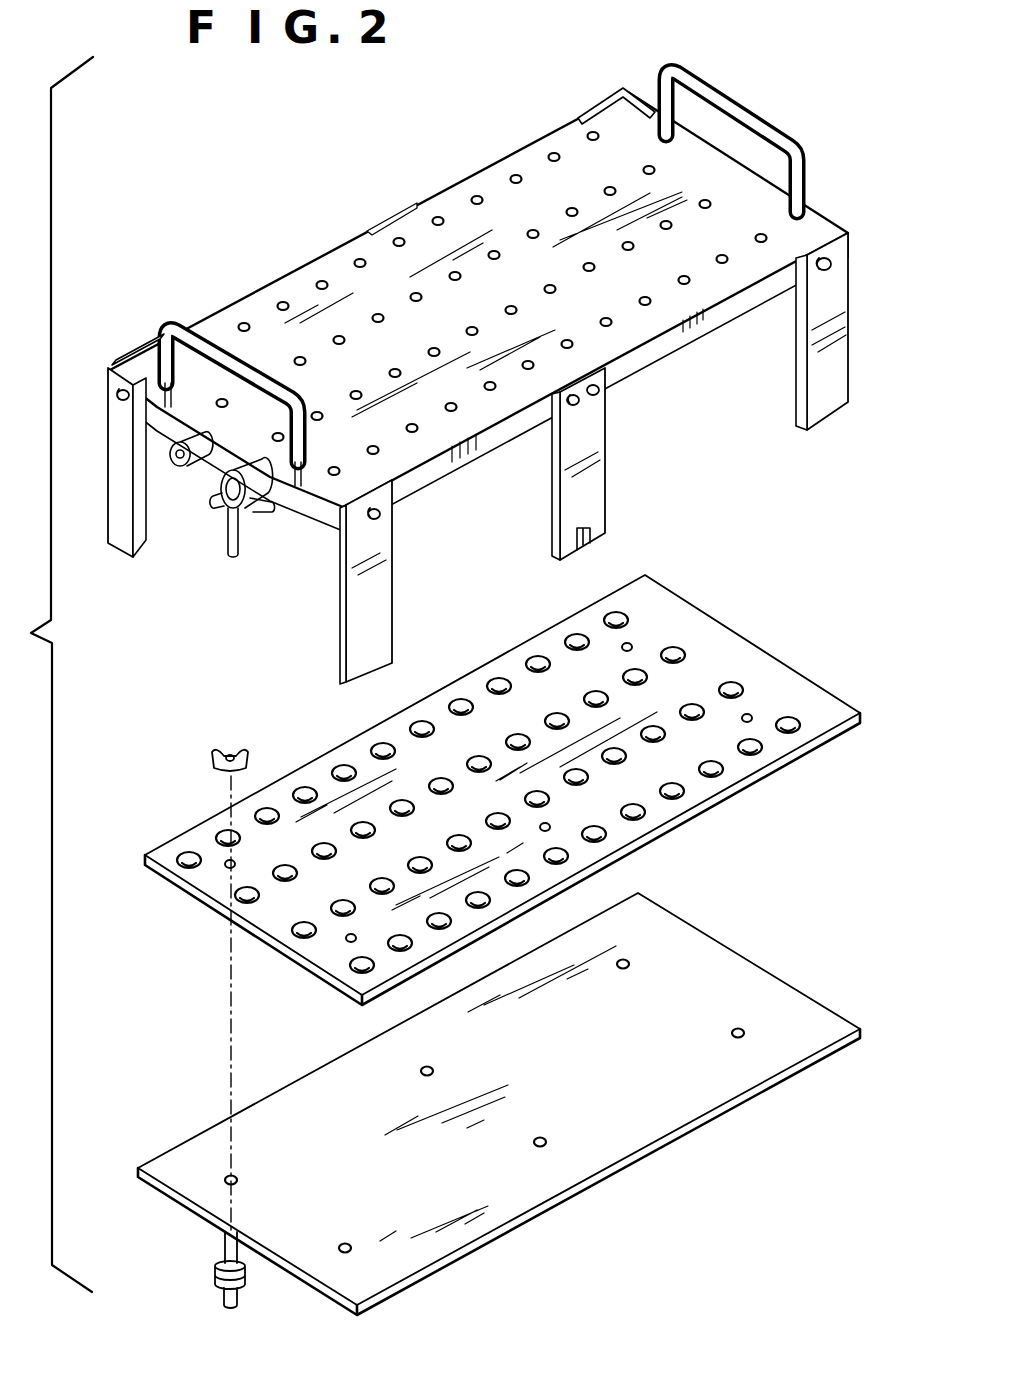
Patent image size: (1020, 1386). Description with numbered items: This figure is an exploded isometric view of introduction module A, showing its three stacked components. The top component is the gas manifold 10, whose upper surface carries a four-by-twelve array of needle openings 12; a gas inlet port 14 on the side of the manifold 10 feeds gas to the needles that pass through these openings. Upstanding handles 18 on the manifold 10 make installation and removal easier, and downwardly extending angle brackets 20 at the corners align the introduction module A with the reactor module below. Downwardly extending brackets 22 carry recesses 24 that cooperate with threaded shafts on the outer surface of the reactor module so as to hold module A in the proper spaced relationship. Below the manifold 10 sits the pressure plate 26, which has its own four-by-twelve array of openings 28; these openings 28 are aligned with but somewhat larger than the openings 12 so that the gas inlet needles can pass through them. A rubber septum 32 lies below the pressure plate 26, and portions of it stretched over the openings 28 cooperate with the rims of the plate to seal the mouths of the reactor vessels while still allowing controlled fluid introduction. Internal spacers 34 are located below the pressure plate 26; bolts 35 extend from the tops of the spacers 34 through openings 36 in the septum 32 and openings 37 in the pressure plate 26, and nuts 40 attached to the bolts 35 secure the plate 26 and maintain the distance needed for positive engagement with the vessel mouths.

The gas manifold 10 is at (470, 204).
The needle openings 12 is at (518, 172).
The gas inlet port 14 is at (213, 508).
The upstanding handles 18 is at (757, 118).
The angle brackets 20 is at (592, 100).
The brackets 22 is at (400, 205).
The recesses 24 is at (602, 522).
The pressure plate 26 is at (860, 713).
The openings 28 is at (538, 665).
The rubber septum 32 is at (733, 950).
The internal spacers 34 is at (213, 1278).
The bolts 35 is at (225, 1248).
The openings 36 is at (541, 1140).
The openings 37 is at (740, 718).
The nuts 40 is at (210, 760).
The introduction module A is at (31, 633).